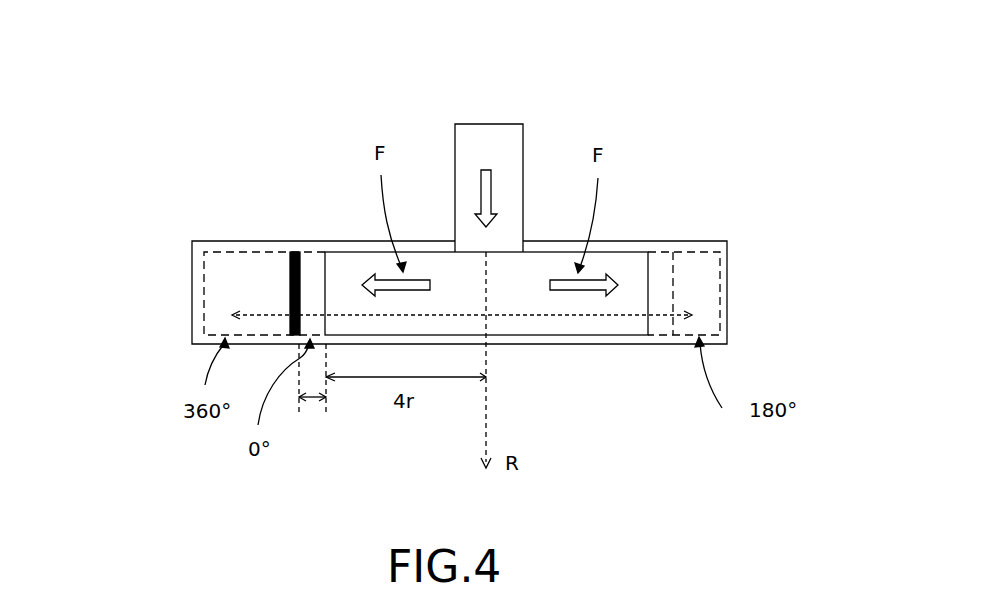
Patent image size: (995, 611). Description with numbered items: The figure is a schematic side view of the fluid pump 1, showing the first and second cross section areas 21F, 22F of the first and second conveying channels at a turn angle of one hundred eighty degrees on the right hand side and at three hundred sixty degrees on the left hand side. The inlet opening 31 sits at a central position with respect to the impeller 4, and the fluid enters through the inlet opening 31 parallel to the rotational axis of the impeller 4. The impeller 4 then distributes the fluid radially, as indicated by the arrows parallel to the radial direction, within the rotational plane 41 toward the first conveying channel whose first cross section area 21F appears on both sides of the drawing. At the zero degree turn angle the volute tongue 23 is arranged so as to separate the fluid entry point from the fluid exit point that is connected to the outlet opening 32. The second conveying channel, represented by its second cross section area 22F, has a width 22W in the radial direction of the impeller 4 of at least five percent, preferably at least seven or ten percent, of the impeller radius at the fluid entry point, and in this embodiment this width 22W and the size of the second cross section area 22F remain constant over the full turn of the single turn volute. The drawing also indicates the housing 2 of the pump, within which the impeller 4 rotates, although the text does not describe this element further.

The fluid pump 1 is at (132, 213).
The housing 2 is at (624, 236).
The impeller 4 is at (531, 291).
The volute tongue 23 is at (295, 247).
The inlet opening 31 is at (486, 118).
The outlet opening 32 is at (241, 235).
The second cross section area 22F is at (314, 271).
The first cross section area 21F is at (236, 283).
The width 22W is at (316, 416).
The rotational plane 41 is at (599, 324).